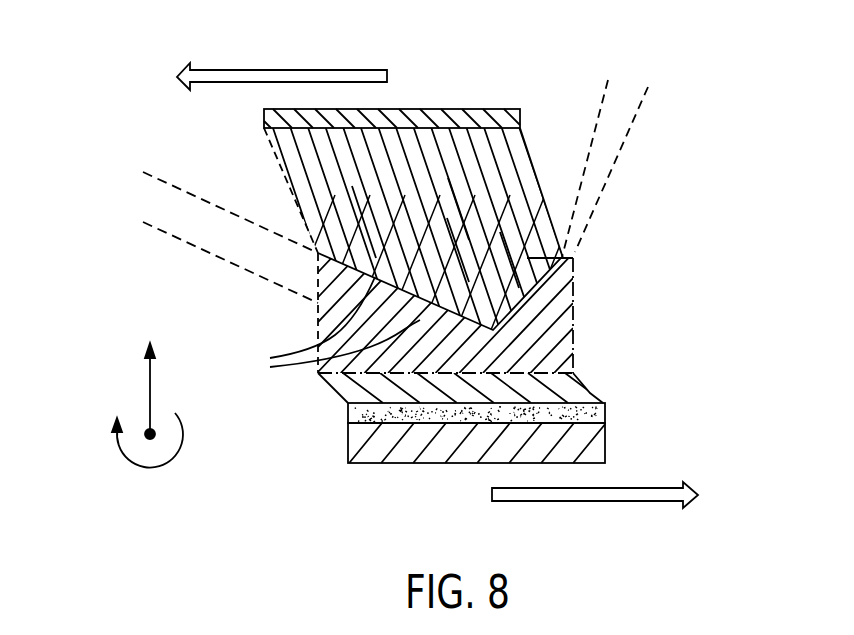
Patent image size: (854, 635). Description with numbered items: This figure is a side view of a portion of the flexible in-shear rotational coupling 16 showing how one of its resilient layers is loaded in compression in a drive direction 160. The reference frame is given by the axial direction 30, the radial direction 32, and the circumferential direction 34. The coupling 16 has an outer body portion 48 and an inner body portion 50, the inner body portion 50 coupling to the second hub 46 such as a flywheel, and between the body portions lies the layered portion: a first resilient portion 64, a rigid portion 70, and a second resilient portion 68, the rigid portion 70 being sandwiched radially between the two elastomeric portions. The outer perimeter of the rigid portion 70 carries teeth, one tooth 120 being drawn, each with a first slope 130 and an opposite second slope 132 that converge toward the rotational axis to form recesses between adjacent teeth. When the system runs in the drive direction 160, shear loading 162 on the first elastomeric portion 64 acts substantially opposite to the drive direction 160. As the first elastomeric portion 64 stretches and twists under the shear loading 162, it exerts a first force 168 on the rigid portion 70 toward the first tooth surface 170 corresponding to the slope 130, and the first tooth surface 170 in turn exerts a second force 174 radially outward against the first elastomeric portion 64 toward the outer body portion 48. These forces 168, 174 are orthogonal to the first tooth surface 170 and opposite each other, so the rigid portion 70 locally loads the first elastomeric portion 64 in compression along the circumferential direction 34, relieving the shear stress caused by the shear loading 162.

The rotational coupling 16 is at (620, 62).
The axial axis or direction 30 is at (145, 430).
The radial axis or direction 32 is at (152, 395).
The circumferential axis or direction 34 is at (162, 467).
The second hub 46 is at (348, 435).
The outer body portion 48 is at (520, 118).
The inner body portion 50 is at (348, 415).
The first resilient portion 64 is at (278, 158).
The second resilient portion 68 is at (583, 390).
The rigid portion 70 is at (572, 318).
The tooth 120 is at (565, 245).
The first slope 130 is at (448, 178).
The second slope 132 is at (500, 232).
The drive direction 160 is at (587, 501).
The shear loading 162 is at (290, 70).
The first force 168 is at (447, 218).
The first tooth surface 170 is at (352, 186).
The second force 174 is at (326, 326).